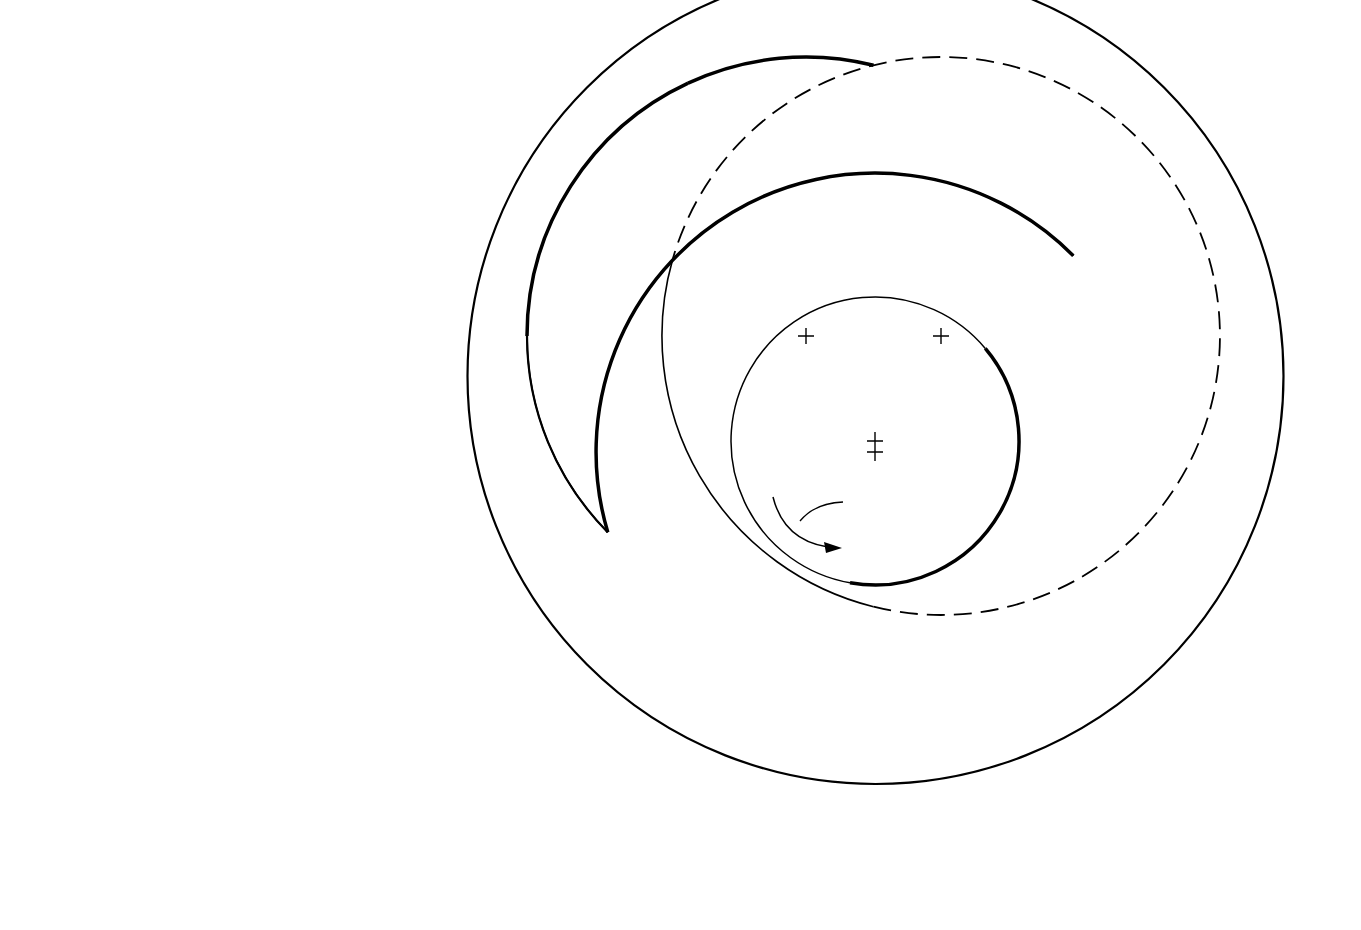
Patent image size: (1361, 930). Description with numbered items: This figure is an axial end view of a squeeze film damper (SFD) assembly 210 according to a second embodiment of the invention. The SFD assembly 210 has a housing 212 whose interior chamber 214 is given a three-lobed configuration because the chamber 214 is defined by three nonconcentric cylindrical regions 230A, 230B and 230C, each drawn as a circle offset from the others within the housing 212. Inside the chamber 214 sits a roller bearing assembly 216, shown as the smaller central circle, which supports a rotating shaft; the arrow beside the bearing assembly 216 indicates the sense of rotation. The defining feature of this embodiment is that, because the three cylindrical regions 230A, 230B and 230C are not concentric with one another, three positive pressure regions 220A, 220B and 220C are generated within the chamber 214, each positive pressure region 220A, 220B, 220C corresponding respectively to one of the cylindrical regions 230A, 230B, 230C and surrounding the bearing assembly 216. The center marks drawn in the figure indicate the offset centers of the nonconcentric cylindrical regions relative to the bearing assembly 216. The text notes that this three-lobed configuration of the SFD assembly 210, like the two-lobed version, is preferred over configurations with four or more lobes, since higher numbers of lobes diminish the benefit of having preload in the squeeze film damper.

The SFD assembly 210 is at (484, 136).
The housing 212 is at (500, 254).
The chamber 214 is at (778, 60).
The roller bearing assembly 216 is at (776, 551).
The positive pressure region 220A is at (580, 218).
The positive pressure region 220B is at (873, 197).
The positive pressure region 220C is at (735, 502).
The cylindrical region 230A is at (613, 130).
The cylindrical region 230B is at (647, 291).
The cylindrical region 230C is at (708, 490).